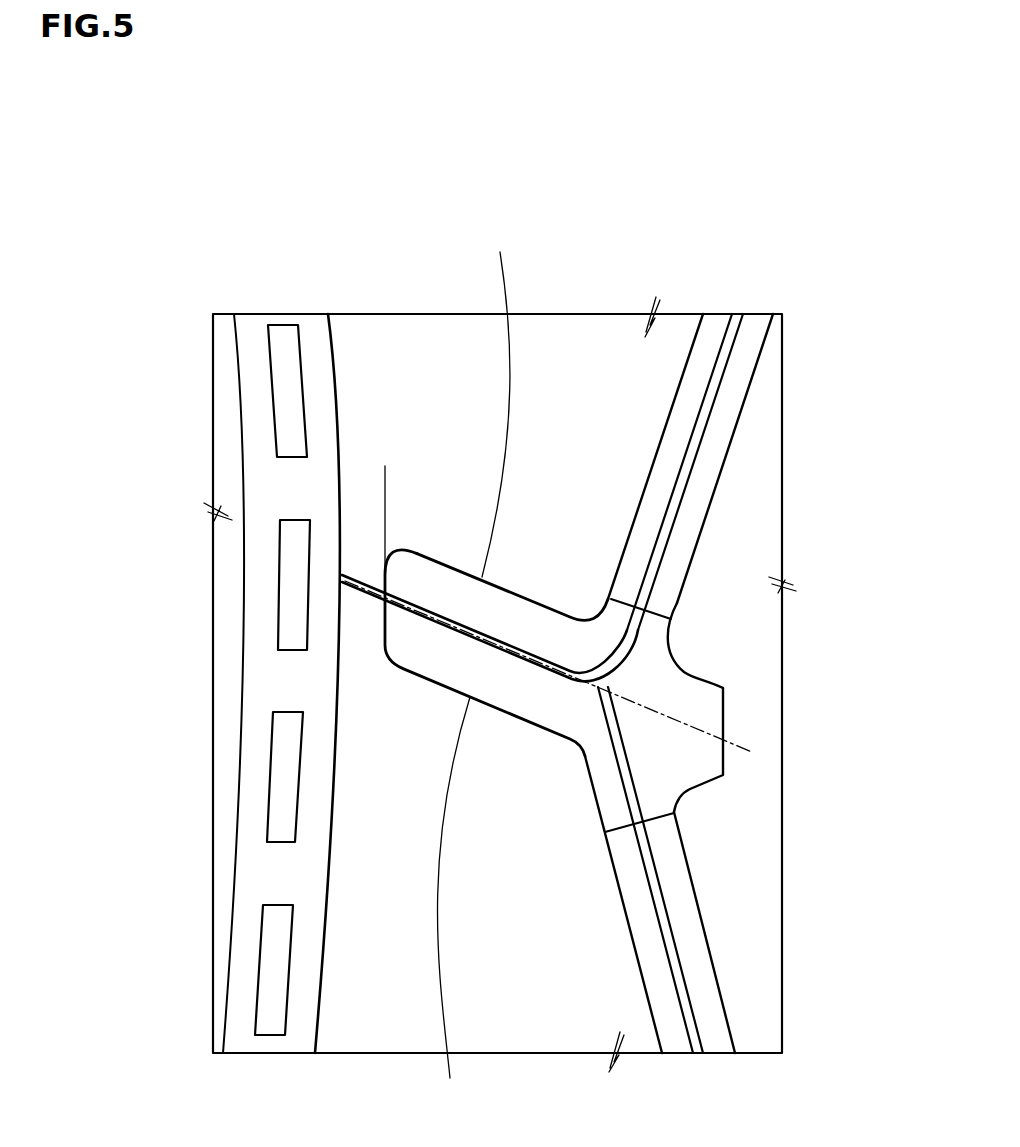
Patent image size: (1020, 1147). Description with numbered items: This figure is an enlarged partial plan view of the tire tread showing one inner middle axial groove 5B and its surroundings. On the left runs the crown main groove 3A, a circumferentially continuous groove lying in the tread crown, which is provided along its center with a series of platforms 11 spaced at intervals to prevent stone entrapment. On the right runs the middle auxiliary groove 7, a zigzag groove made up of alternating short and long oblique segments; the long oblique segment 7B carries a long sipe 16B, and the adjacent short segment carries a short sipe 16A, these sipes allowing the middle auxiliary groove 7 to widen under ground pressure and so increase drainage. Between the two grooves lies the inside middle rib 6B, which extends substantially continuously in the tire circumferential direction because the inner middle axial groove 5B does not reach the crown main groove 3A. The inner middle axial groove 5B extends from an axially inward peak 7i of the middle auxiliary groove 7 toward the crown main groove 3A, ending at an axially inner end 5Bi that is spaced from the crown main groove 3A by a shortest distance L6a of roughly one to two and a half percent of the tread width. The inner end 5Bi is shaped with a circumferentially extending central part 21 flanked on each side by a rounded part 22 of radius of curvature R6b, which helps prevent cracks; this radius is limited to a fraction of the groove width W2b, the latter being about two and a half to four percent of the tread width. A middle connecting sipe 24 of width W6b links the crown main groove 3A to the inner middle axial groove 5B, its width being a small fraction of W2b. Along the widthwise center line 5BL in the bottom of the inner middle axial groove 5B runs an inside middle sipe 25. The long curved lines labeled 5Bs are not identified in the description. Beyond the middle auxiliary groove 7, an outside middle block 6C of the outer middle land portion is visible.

The crown main groove 3A is at (257, 343).
The platforms 11 is at (275, 937).
The inside middle sipe 25 is at (433, 627).
The inside middle rib 6B is at (463, 333).
The inner middle axial groove 5B is at (543, 602).
The bead side wall 5Bs is at (477, 667).
The radius of curvature R6b is at (403, 569).
The shortest distance L6a is at (418, 473).
The width of middle connecting sipe W6b is at (380, 560).
The widthwise center line 5BL is at (748, 760).
The width of inner middle axial groove W2b is at (558, 617).
The middle auxiliary groove 7 is at (693, 512).
The short sipe 16A is at (697, 440).
The axially inward peak 7i is at (658, 688).
The outside middle block 6C is at (765, 838).
The long sipe 16B is at (663, 913).
The long oblique segment 7B is at (692, 945).
The rounded part 22 is at (384, 552).
The middle connecting sipe 24 is at (385, 600).
The circumferentially extending central part 21 is at (385, 628).
The axially inner end 5Bi is at (122, 527).